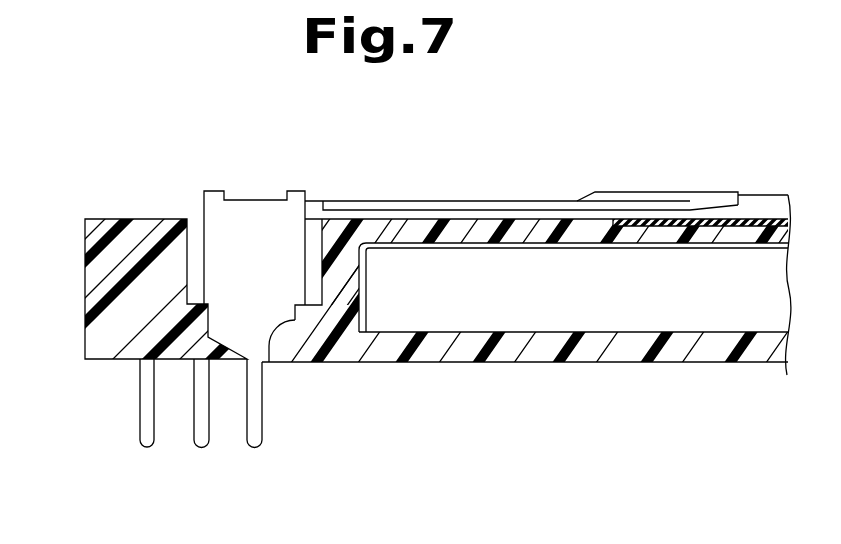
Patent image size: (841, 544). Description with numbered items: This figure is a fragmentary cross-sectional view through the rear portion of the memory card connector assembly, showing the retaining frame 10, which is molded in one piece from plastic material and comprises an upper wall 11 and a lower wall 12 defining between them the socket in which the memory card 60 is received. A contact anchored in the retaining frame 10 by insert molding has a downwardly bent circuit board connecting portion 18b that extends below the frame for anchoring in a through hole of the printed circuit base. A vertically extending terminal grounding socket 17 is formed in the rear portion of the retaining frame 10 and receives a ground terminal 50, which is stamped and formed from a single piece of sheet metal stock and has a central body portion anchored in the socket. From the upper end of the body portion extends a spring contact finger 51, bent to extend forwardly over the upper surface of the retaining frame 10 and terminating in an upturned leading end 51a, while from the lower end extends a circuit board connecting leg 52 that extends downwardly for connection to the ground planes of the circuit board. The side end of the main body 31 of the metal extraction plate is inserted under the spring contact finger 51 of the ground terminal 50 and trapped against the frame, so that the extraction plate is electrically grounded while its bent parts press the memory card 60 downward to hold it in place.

The retaining frame 10 is at (152, 207).
The upper wall 11 is at (550, 235).
The lower wall 12 is at (536, 354).
The terminal grounding socket 17 is at (268, 361).
The circuit board connecting portion 18b is at (146, 417).
The main body 31 is at (628, 218).
The ground terminal 50 is at (267, 188).
The spring contact finger 51 is at (438, 203).
The upturned leading end 51a is at (707, 207).
The circuit board connecting leg 52 is at (262, 408).
The memory card 60 is at (582, 296).